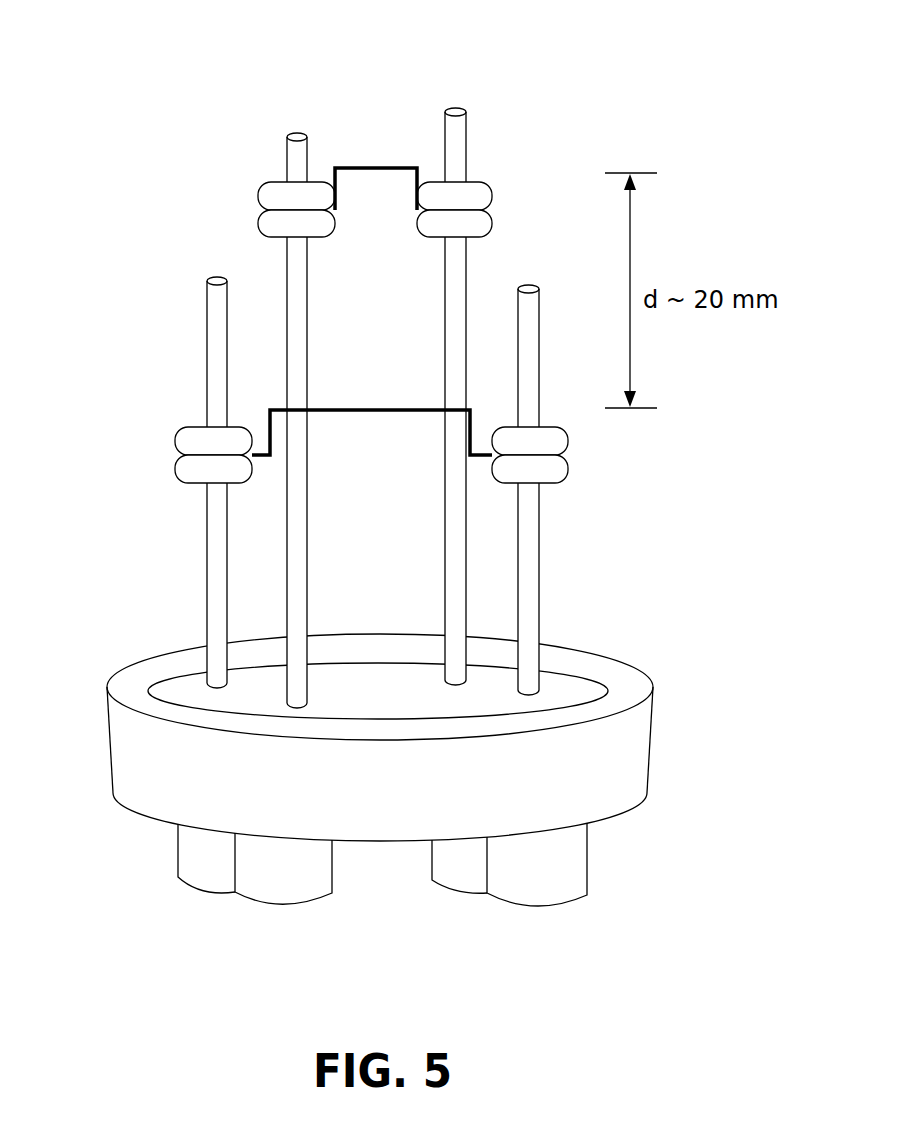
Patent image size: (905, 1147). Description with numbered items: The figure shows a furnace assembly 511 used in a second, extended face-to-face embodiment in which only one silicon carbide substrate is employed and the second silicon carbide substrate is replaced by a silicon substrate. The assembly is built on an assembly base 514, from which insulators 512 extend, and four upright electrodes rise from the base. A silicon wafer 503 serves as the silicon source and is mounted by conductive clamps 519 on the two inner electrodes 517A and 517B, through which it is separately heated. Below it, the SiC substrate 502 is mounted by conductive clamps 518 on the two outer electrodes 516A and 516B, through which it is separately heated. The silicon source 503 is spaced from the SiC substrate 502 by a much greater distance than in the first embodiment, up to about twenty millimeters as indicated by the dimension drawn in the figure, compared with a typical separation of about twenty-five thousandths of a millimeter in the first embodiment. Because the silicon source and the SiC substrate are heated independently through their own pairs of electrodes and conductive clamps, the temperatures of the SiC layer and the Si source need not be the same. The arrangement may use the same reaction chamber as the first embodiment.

The furnace assembly 511 is at (218, 136).
The SiC substrate 502 is at (383, 408).
The silicon wafer 503 is at (374, 168).
The insulators 512 is at (560, 877).
The assembly base 514 is at (617, 753).
The electrode 516A is at (223, 532).
The electrode 516B is at (530, 607).
The electrode 517A is at (298, 597).
The electrode 517B is at (457, 533).
The conductive clamps 518 is at (568, 477).
The conductive clamps 519 is at (488, 182).